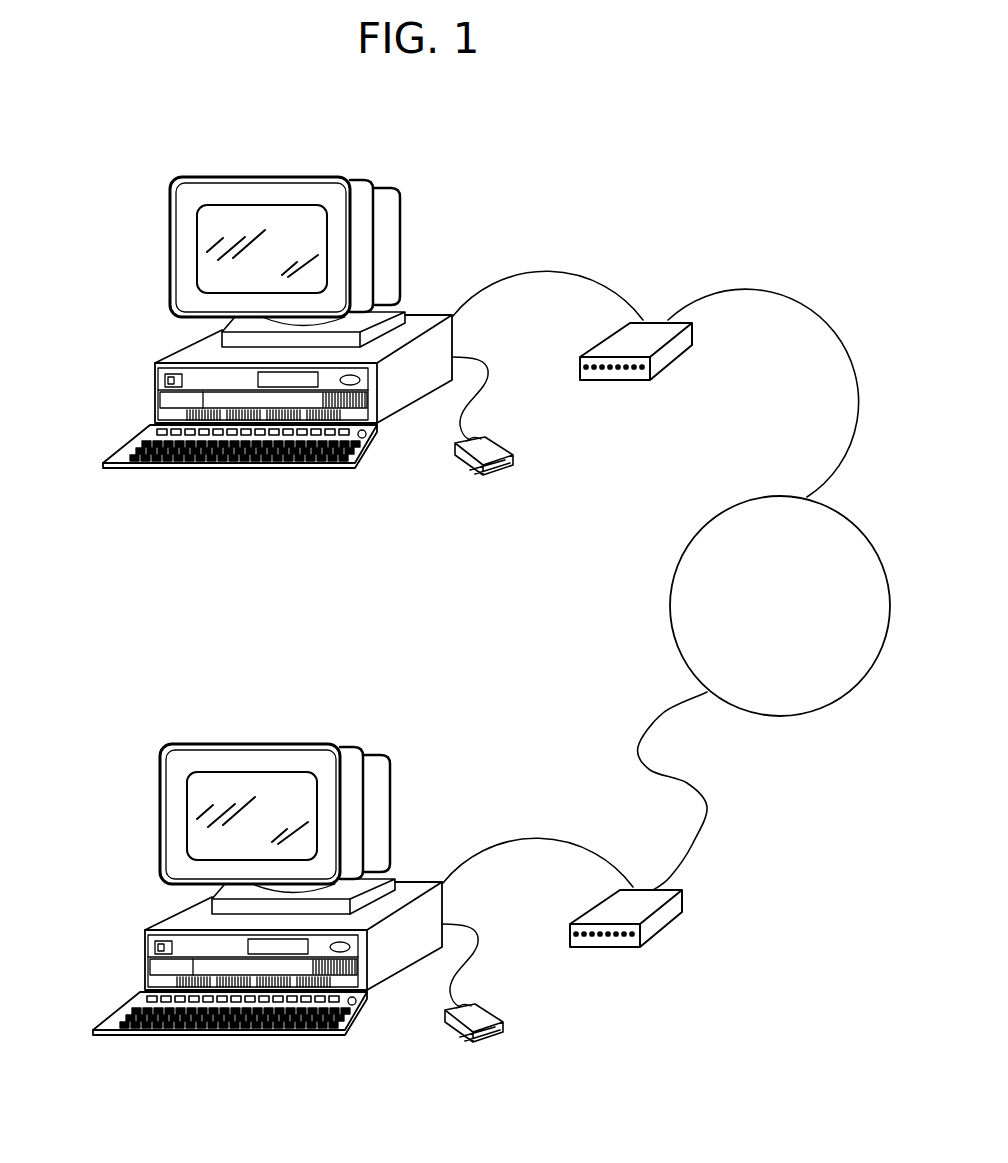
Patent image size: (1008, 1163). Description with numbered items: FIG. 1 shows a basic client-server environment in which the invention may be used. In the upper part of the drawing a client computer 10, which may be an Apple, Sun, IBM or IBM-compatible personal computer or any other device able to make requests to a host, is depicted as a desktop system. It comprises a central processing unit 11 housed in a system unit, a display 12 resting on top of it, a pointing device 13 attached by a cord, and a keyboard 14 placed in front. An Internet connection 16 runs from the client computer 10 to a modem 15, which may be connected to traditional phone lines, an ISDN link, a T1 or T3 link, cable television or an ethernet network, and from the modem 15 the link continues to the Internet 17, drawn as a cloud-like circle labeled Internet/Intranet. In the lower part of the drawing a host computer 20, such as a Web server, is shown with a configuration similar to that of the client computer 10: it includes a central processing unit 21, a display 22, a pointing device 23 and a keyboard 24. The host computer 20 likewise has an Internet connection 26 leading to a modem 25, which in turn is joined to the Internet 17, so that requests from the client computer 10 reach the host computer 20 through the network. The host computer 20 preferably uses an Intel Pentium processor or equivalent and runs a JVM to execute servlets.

The client computer 10 is at (158, 176).
The central processing unit 11 is at (153, 363).
The display 12 is at (213, 268).
The pointing device 13 is at (500, 443).
The keyboard 14 is at (162, 468).
The modem 15 is at (670, 365).
The Internet connection 16 is at (520, 273).
The Internet 17 is at (735, 505).
The host computer 20 is at (389, 722).
The central processing unit 21 is at (140, 932).
The display 22 is at (205, 838).
The pointing device 23 is at (492, 1008).
The keyboard 24 is at (182, 1035).
The modem 25 is at (660, 930).
The Internet connection 26 is at (542, 840).